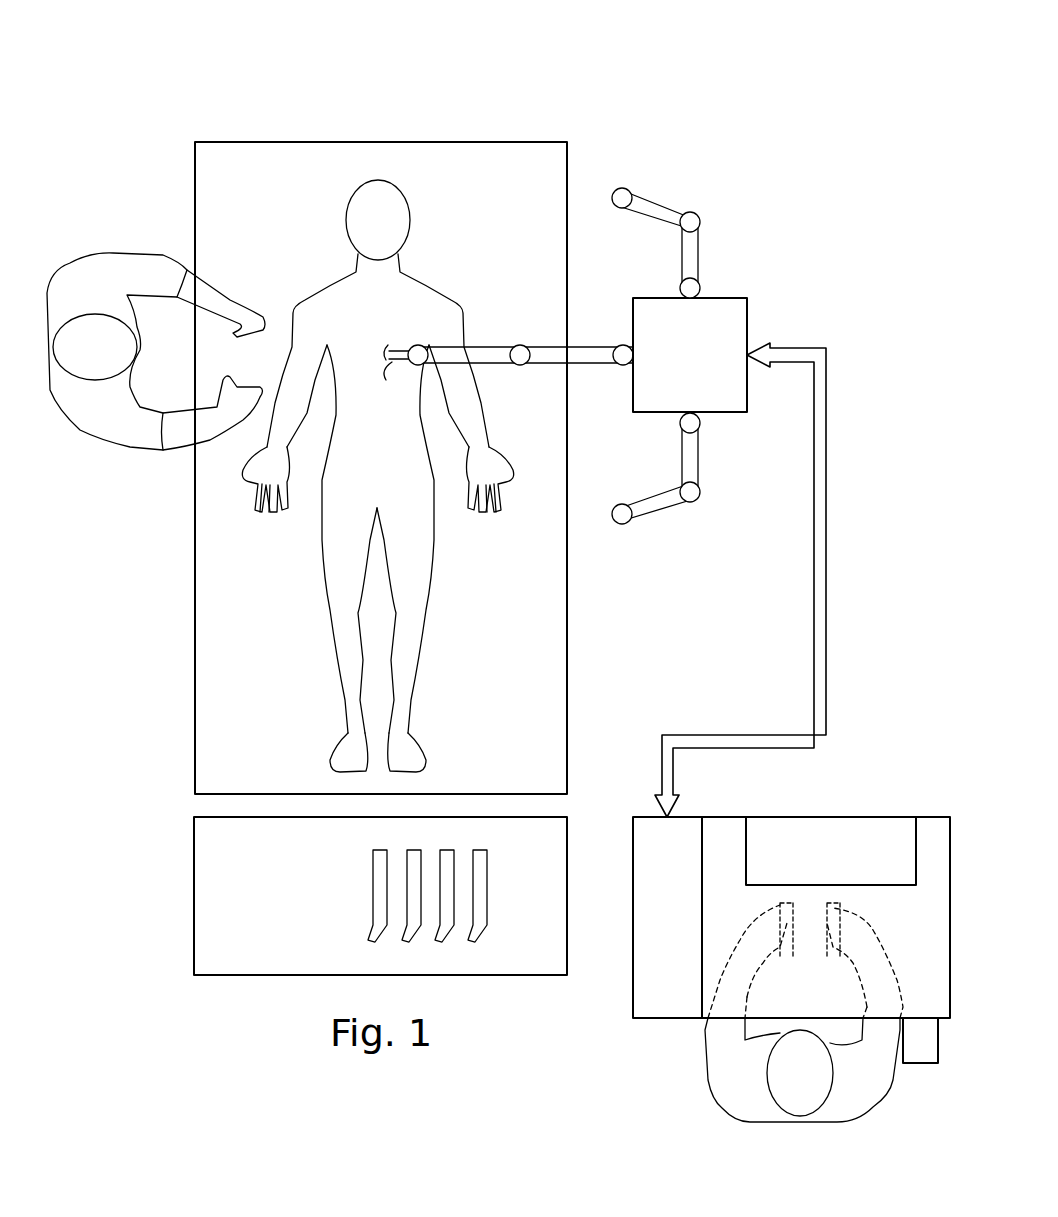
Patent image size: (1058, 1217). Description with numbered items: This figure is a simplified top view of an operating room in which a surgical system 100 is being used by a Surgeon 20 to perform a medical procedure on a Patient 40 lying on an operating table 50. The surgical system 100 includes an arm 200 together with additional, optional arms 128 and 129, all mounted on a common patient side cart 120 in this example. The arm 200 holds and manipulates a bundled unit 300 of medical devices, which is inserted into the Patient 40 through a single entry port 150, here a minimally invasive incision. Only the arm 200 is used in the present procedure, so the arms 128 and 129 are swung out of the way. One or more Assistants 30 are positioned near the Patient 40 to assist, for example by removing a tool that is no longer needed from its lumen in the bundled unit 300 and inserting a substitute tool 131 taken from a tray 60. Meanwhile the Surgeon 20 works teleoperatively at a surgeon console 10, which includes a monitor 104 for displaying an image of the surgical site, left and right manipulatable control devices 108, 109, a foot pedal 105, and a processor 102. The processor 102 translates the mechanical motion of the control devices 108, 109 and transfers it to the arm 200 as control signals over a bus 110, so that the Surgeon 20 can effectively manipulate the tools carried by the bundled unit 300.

The surgical system 100 is at (612, 74).
The operating table 50 is at (291, 141).
The Patient 40 is at (331, 276).
The bundled unit 300 is at (392, 348).
The entry port 150 is at (390, 366).
The arm 200 is at (588, 333).
The patient side cart 120 is at (722, 297).
The arm 129 is at (664, 185).
The arm 128 is at (663, 530).
The bus 110 is at (828, 547).
The surgeon console 10 is at (930, 815).
The processor 102 is at (674, 917).
The monitor 104 is at (831, 851).
The foot pedal 105 is at (920, 1066).
The control device 108 is at (787, 960).
The control device 109 is at (833, 960).
The Surgeon 20 is at (833, 1124).
The Assistant 30 is at (75, 258).
The tray 60 is at (194, 895).
The substitute tool 131 is at (358, 878).